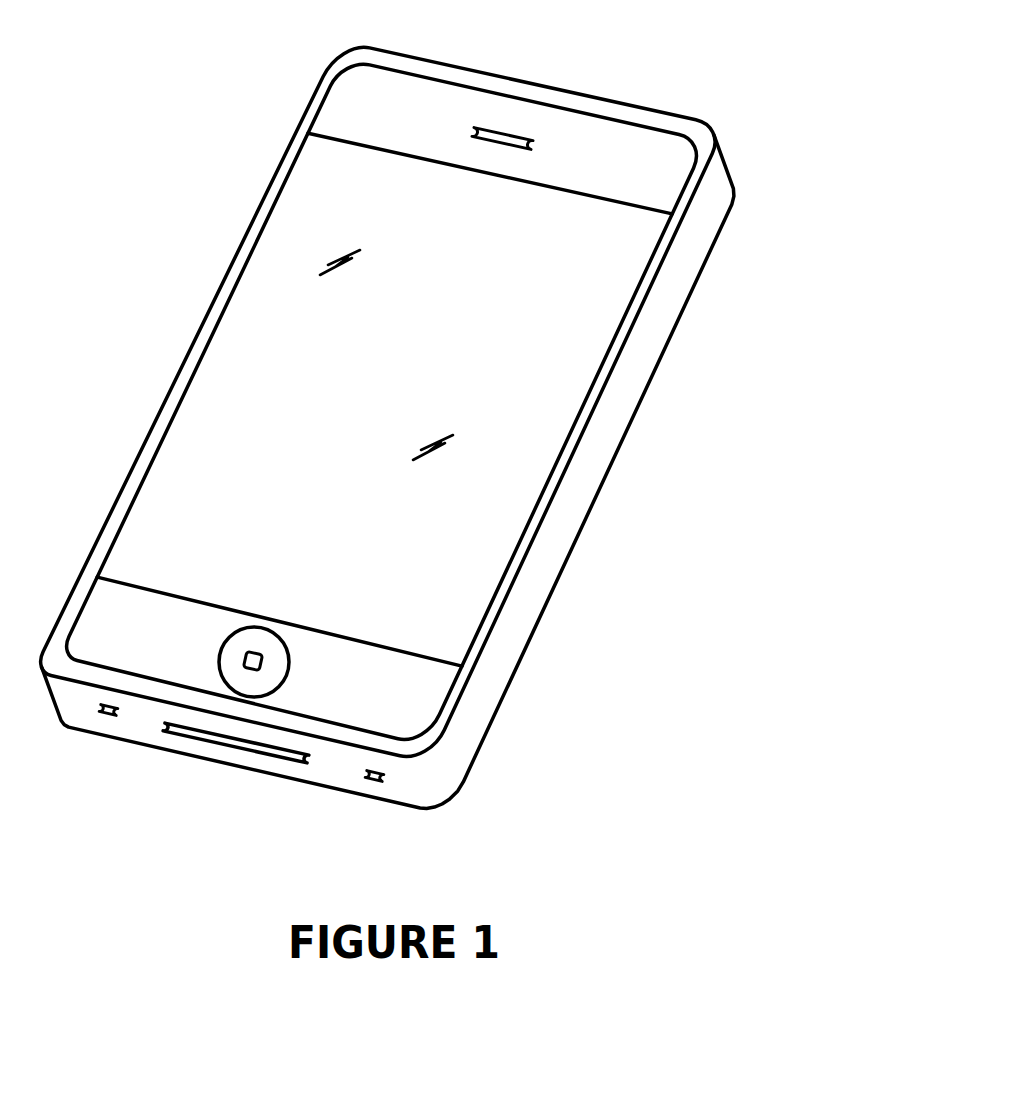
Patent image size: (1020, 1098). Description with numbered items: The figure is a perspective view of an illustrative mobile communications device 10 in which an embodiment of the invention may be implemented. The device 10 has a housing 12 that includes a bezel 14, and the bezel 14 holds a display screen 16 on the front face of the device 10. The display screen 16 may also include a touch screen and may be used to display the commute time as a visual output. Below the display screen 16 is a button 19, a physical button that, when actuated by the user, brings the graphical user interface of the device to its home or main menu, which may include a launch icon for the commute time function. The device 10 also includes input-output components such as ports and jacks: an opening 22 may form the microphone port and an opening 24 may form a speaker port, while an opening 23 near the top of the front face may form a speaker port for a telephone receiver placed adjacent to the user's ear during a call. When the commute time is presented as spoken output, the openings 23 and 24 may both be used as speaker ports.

The mobile communications device 10 is at (460, 448).
The housing 12 is at (388, 508).
The bezel 14 is at (179, 379).
The display screen 16 is at (622, 282).
The button 19 is at (287, 673).
The opening 22 is at (110, 716).
The opening 23 is at (488, 130).
The opening 24 is at (382, 781).